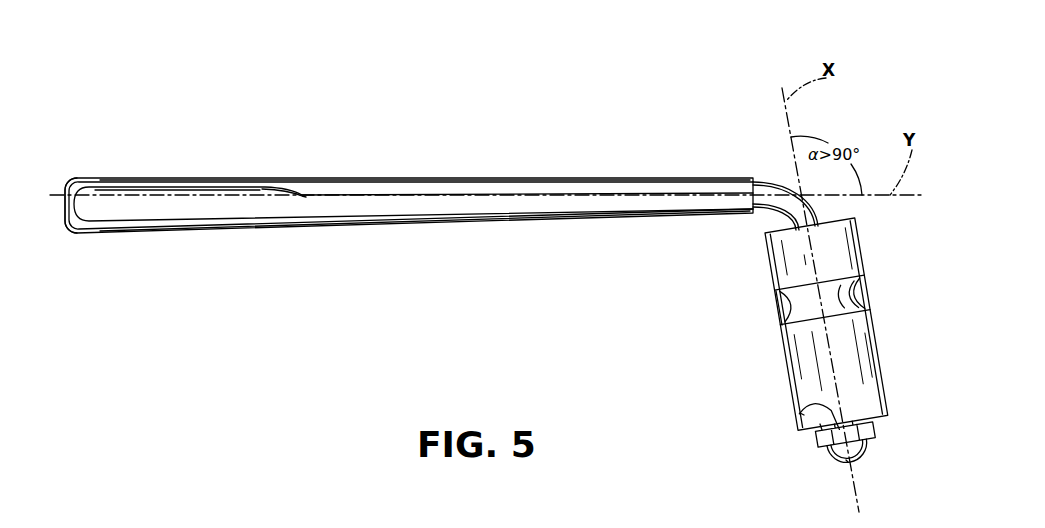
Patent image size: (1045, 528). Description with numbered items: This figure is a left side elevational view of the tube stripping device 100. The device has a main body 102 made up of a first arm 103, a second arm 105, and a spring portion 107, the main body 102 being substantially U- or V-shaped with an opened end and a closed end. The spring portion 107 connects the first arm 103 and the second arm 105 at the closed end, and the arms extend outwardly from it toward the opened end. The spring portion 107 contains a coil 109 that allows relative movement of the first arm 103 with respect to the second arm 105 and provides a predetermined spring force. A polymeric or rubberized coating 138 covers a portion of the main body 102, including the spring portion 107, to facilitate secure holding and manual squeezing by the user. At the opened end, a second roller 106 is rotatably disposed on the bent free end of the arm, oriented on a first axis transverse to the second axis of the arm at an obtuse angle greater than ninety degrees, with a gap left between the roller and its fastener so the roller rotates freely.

The tube stripping device 100 is at (273, 114).
The main body 102 is at (241, 178).
The first arm 103 is at (487, 178).
The second arm 105 is at (487, 217).
The spring portion 107 is at (66, 188).
The polymeric or rubberized coating 138 is at (166, 176).
The coil 109 is at (294, 183).
The second roller 106 is at (875, 365).